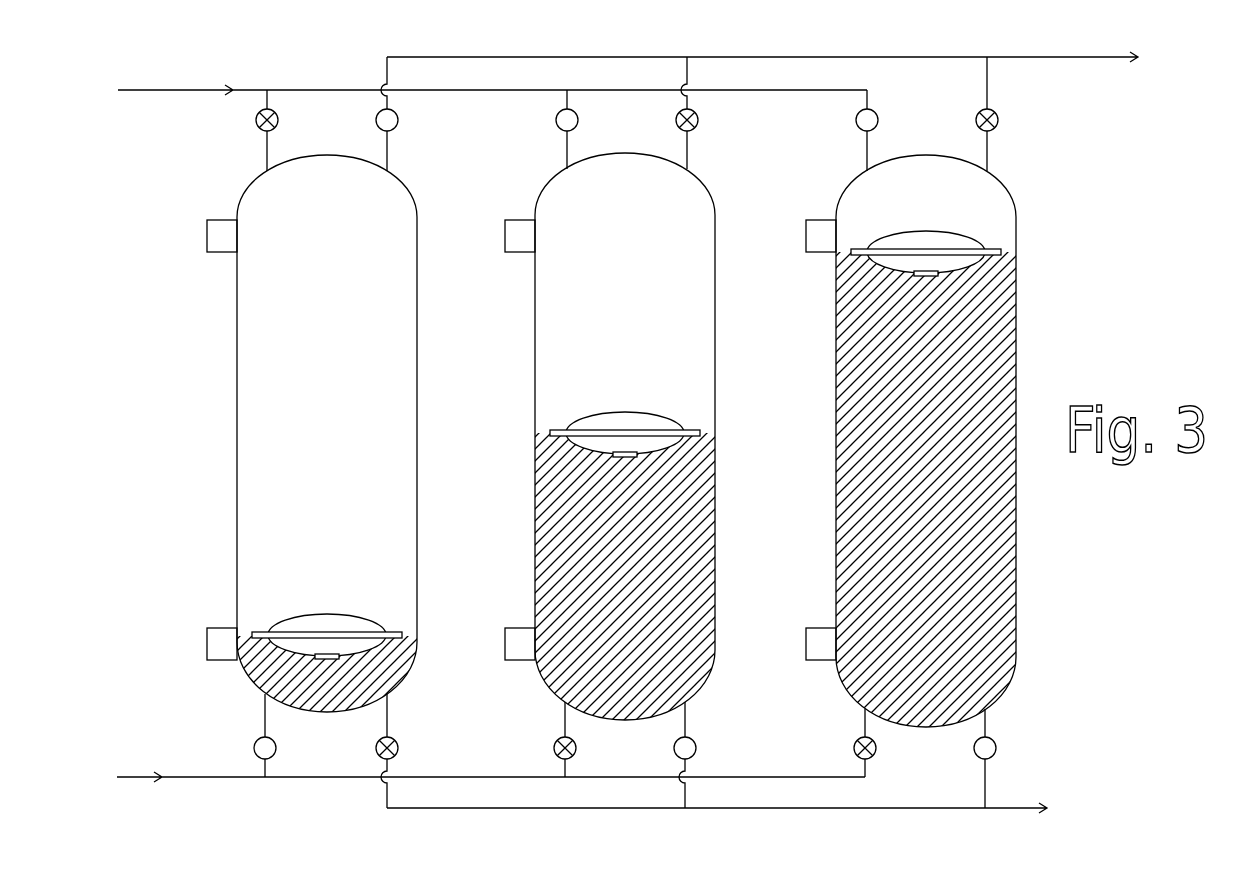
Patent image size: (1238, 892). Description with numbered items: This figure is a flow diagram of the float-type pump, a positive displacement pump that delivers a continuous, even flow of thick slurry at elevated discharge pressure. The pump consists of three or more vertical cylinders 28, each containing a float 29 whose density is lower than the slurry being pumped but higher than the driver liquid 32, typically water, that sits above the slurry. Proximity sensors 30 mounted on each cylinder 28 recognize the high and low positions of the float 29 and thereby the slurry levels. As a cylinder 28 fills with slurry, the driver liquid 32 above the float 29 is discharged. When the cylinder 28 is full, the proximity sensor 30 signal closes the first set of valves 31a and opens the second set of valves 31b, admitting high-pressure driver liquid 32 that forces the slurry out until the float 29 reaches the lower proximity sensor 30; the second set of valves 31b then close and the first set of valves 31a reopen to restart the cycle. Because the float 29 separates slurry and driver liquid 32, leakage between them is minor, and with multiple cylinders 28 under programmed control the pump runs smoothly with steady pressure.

The vertical cylinder 28 is at (417, 288).
The float 29 is at (328, 614).
The proximity sensor 30 is at (207, 237).
The first set of valves 31a is at (399, 120).
The second set of valves 31b is at (278, 120).
The driver liquid 32 is at (133, 92).